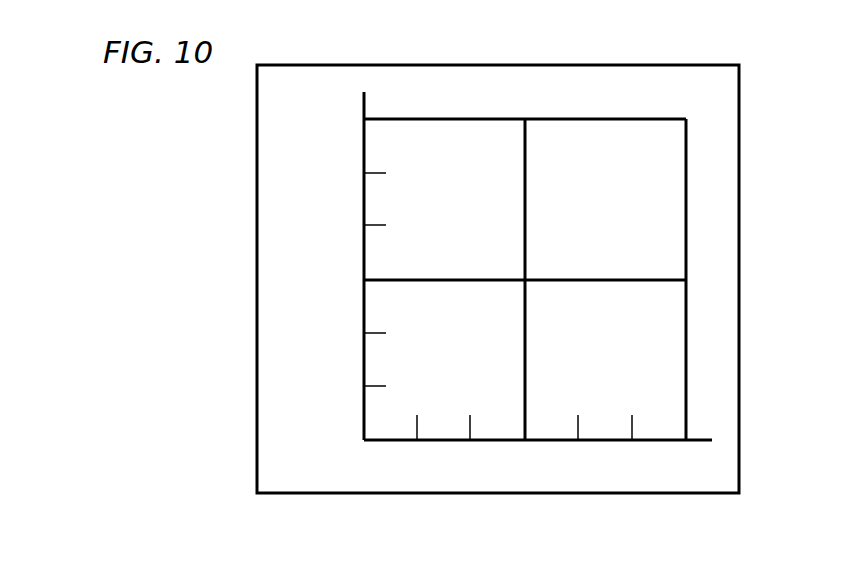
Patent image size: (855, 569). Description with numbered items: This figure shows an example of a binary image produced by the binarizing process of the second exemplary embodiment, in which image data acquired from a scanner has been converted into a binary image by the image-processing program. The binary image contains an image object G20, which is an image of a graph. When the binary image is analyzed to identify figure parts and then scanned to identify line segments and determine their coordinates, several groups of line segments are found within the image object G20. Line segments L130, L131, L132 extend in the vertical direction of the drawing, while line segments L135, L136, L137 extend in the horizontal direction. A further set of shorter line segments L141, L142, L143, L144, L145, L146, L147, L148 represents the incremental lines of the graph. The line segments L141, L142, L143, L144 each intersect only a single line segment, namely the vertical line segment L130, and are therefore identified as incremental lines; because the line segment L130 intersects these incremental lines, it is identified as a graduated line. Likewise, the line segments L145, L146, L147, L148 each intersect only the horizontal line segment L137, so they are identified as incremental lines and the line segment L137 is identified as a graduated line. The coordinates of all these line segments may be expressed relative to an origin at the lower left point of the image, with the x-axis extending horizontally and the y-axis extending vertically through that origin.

The image object G20 is at (698, 193).
The line segment L130 is at (364, 266).
The line segment L131 is at (524, 190).
The line segment L132 is at (687, 247).
The line segment L135 is at (489, 118).
The line segment L136 is at (628, 283).
The line segment L137 is at (497, 441).
The line segment L141 is at (364, 173).
The line segment L142 is at (364, 225).
The line segment L143 is at (364, 333).
The line segment L144 is at (364, 386).
The line segment L145 is at (417, 441).
The line segment L146 is at (470, 441).
The line segment L147 is at (578, 441).
The line segment L148 is at (632, 441).